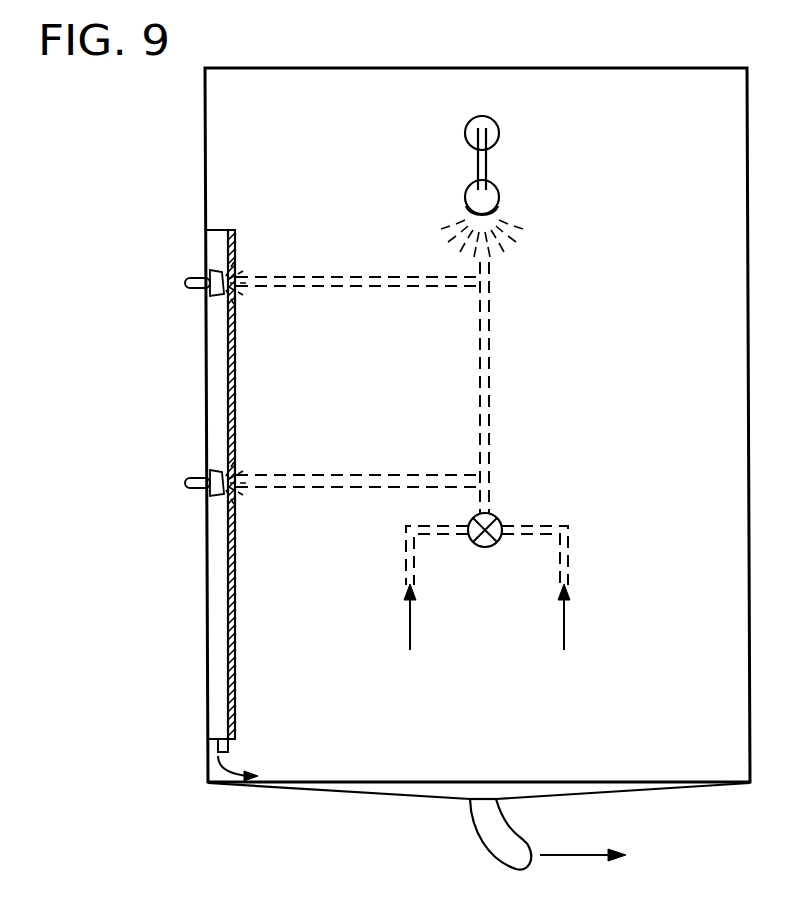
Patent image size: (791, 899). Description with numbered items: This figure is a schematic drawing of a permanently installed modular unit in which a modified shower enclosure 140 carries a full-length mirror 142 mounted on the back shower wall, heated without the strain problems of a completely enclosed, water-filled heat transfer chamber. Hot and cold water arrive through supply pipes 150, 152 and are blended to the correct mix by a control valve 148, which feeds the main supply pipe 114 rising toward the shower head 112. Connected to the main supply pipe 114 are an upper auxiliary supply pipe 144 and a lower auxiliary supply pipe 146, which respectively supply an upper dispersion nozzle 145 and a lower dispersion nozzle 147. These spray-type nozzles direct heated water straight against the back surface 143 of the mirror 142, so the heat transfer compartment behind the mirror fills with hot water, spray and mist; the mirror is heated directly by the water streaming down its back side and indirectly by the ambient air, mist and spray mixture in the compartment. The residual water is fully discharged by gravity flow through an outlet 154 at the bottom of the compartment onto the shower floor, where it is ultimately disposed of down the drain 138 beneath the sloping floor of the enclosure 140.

The shower head 112 is at (470, 195).
The main supply pipe 114 is at (492, 302).
The drain 138 is at (487, 797).
The modified shower enclosure 140 is at (204, 182).
The full-length mirror 142 is at (237, 410).
The back surface 143 is at (233, 598).
The upper auxiliary supply pipe 144 is at (322, 288).
The upper dispersion nozzle 145 is at (208, 290).
The lower auxiliary supply pipe 146 is at (424, 472).
The lower dispersion nozzle 147 is at (208, 488).
The control valve 148 is at (492, 547).
The supply pipe 150 is at (527, 520).
The supply pipe 152 is at (430, 526).
The outlet 154 is at (217, 748).